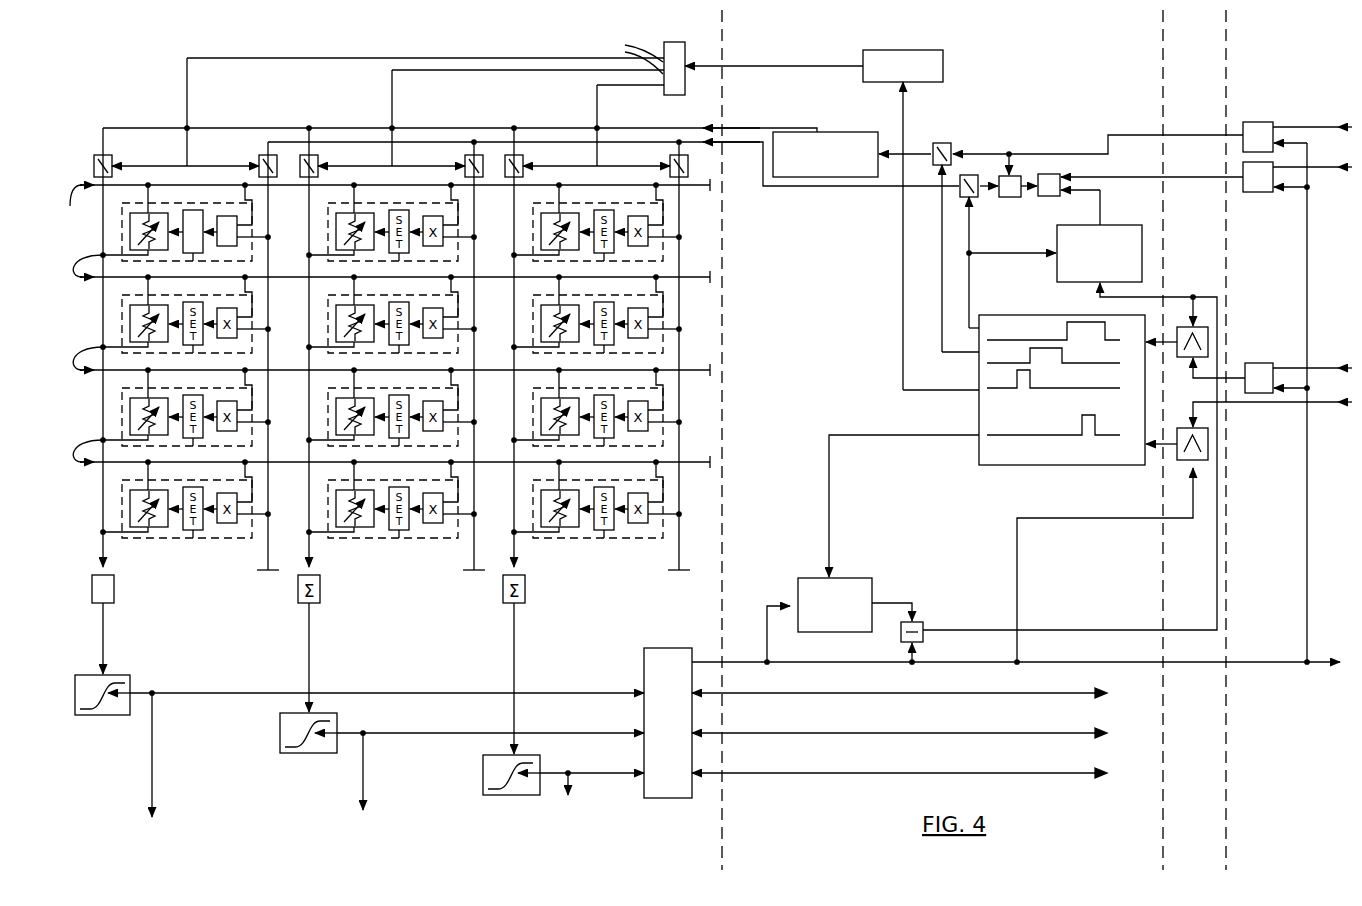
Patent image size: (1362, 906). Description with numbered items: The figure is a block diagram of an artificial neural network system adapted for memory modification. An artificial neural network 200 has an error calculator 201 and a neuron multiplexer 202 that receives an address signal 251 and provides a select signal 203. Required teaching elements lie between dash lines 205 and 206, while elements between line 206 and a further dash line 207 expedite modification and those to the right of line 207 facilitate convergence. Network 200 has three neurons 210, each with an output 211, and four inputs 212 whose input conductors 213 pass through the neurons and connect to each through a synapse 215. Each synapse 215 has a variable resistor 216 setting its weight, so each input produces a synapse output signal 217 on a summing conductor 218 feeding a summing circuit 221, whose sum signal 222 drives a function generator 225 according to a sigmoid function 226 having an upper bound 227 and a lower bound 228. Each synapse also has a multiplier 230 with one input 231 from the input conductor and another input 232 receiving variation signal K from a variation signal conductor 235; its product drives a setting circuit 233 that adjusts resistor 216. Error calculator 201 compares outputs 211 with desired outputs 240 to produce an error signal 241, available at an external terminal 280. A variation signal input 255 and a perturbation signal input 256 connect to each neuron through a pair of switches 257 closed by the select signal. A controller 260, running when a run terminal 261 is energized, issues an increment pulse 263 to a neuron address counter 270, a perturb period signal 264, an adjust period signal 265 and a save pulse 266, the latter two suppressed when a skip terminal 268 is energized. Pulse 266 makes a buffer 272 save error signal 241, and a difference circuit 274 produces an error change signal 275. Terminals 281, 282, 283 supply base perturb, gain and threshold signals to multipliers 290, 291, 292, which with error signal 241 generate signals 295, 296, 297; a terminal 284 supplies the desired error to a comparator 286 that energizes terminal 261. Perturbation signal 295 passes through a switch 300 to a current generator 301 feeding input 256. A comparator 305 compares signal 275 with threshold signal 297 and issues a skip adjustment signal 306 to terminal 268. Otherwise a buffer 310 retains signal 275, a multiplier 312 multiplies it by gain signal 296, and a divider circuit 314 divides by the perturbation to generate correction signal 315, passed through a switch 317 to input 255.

The artificial neural network 200 is at (428, 55).
The error calculator 201 is at (672, 647).
The neuron multiplexer 202 is at (682, 40).
The select signal 203 is at (626, 53).
The dash line 205 is at (722, 32).
The dash line 206 is at (1163, 58).
The dash line 207 is at (1226, 58).
The neuron 210 is at (200, 160).
The output 211 is at (363, 812).
The input 212 is at (390, 323).
The input conductor 213 is at (688, 190).
The synapse 215 is at (436, 334).
The variable resistor 216 is at (365, 362).
The synapse output signal 217 is at (324, 410).
The summing conductor 218 is at (140, 168).
The summing circuit 221 is at (116, 592).
The sum signal 222 is at (104, 630).
The function generator 225 is at (120, 718).
The function 226 is at (135, 692).
The upper bound 227 is at (118, 690).
The lower bound 228 is at (85, 710).
The multiplier 230 is at (444, 370).
The multiplier input 231 is at (478, 331).
The multiplier input 232 is at (462, 358).
The setting circuit 233 is at (407, 407).
The variation signal conductor 235 is at (720, 552).
The desired output 240 is at (730, 695).
The error signal 241 is at (744, 660).
The address signal 251 is at (697, 64).
The variation signal input 255 is at (375, 140).
The perturbation signal input 256 is at (170, 130).
The switch 257 is at (103, 155).
The controller 260 is at (1055, 295).
The run terminal 261 is at (1146, 452).
The increment pulse 263 is at (958, 388).
The perturb period signal 264 is at (960, 350).
The adjust period signal 265 is at (970, 320).
The save pulse 266 is at (905, 434).
The skip terminal 268 is at (1180, 320).
The neuron address counter 270 is at (928, 48).
The buffer 272 is at (855, 577).
The difference circuit 274 is at (920, 620).
The error change signal 275 is at (968, 628).
The external terminal 280 is at (1325, 664).
The base perturb terminal 281 is at (1348, 115).
The base gain terminal 282 is at (1350, 168).
The base error threshold terminal 283 is at (1348, 365).
The desired error terminal 284 is at (1348, 406).
The comparator 286 is at (1210, 436).
The multiplier 290 is at (1250, 120).
The multiplier 291 is at (1265, 193).
The multiplier 292 is at (1262, 362).
The perturbation signal 295 is at (1150, 135).
The gain signal 296 is at (1152, 176).
The threshold signal 297 is at (1235, 385).
The switch 300 is at (948, 142).
The current generator 301 is at (828, 130).
The comparator 305 is at (1208, 332).
The skip adjustment signal 306 is at (1175, 345).
The buffer 310 is at (1090, 224).
The multiplier 312 is at (1048, 172).
The divider circuit 314 is at (1026, 174).
The correction signal 315 is at (994, 174).
The switch 317 is at (965, 176).